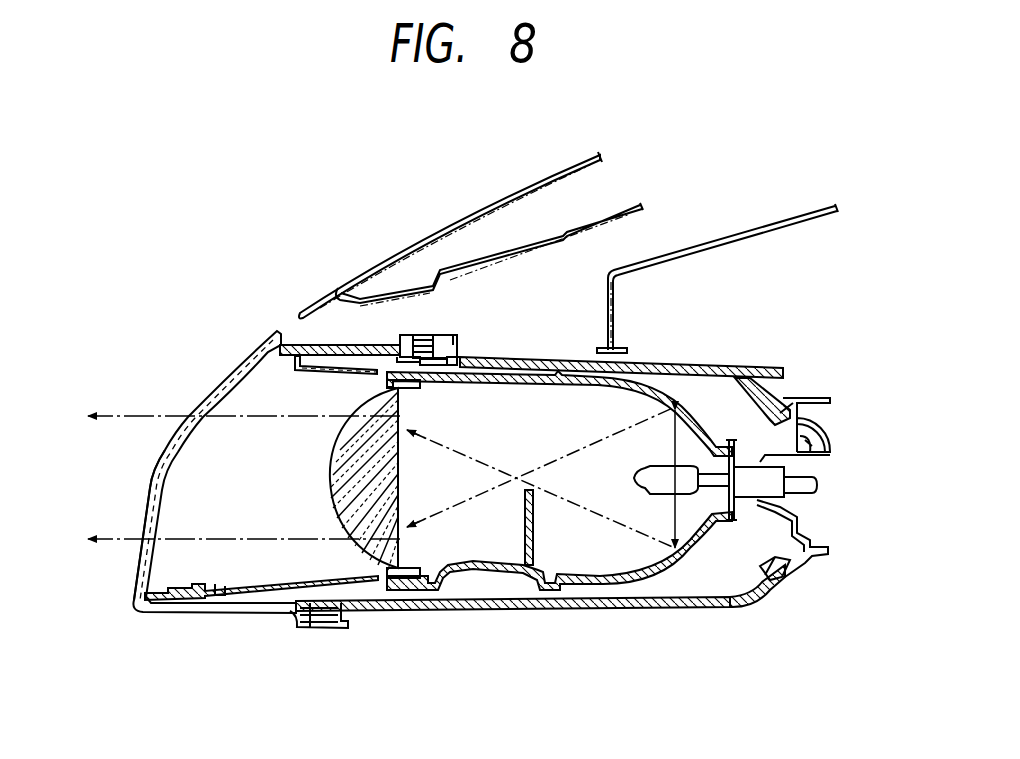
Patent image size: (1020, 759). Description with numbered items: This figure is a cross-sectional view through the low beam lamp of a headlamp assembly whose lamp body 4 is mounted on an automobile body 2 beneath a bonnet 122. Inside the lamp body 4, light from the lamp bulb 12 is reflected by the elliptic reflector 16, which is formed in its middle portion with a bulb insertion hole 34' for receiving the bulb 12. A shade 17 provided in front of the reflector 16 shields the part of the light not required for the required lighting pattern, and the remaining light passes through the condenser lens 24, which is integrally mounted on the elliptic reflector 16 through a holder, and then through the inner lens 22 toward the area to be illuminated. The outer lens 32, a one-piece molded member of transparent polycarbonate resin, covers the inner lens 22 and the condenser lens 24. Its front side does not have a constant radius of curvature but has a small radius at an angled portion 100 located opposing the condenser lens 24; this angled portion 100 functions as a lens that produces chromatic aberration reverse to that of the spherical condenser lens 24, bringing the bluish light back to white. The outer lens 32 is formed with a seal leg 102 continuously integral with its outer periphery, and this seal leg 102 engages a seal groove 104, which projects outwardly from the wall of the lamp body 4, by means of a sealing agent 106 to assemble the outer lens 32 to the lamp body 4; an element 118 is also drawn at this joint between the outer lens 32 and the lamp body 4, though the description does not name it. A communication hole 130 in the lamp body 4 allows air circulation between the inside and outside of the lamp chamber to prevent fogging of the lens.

The automobile body 2 is at (737, 240).
The lamp body 4 is at (660, 360).
The lamp bulb 12 is at (640, 486).
The elliptic reflector 16 is at (702, 524).
The shade 17 is at (540, 525).
The inner lens 22 is at (178, 588).
The condenser lens 24 is at (333, 498).
The outer lens 32 is at (145, 503).
The bulb insertion hole 34' is at (557, 477).
The angled portion 100 is at (168, 437).
The seal leg 102 is at (457, 348).
The seal groove 104 is at (435, 342).
The sealing agent 106 is at (440, 355).
The hook 118 is at (412, 336).
The bonnet 122 is at (477, 210).
The communication hole 130 is at (824, 432).